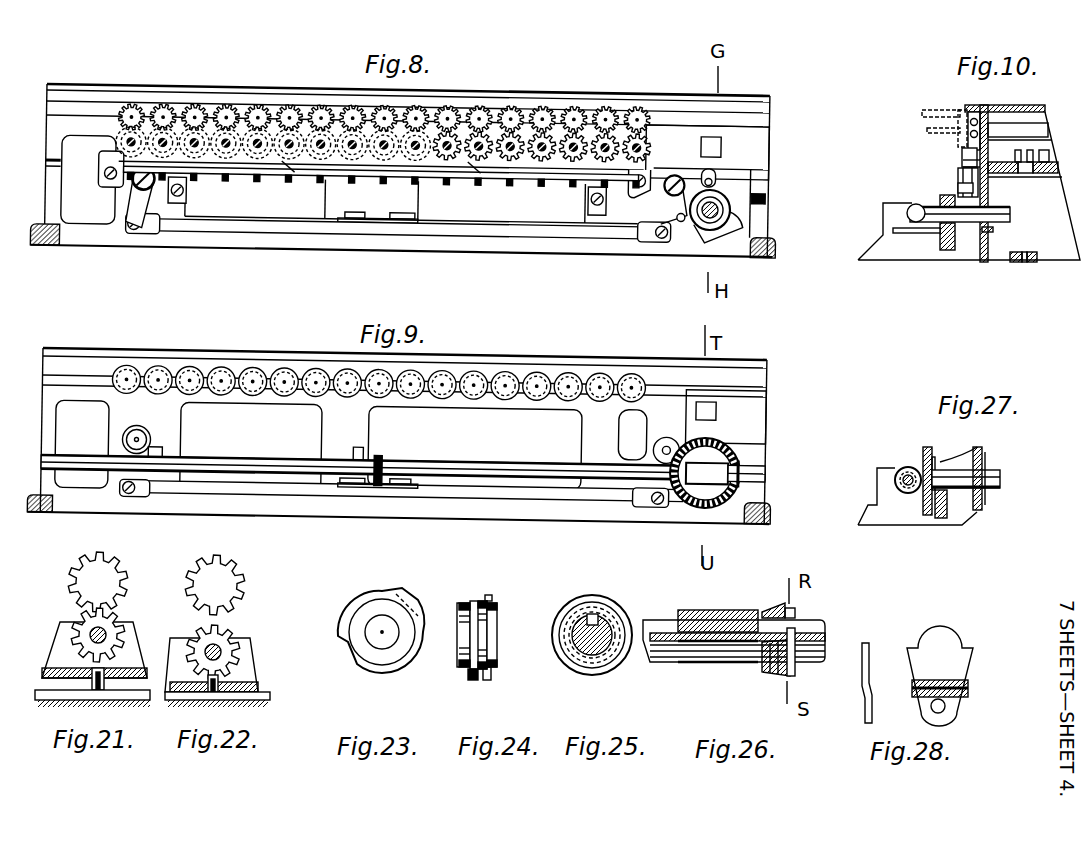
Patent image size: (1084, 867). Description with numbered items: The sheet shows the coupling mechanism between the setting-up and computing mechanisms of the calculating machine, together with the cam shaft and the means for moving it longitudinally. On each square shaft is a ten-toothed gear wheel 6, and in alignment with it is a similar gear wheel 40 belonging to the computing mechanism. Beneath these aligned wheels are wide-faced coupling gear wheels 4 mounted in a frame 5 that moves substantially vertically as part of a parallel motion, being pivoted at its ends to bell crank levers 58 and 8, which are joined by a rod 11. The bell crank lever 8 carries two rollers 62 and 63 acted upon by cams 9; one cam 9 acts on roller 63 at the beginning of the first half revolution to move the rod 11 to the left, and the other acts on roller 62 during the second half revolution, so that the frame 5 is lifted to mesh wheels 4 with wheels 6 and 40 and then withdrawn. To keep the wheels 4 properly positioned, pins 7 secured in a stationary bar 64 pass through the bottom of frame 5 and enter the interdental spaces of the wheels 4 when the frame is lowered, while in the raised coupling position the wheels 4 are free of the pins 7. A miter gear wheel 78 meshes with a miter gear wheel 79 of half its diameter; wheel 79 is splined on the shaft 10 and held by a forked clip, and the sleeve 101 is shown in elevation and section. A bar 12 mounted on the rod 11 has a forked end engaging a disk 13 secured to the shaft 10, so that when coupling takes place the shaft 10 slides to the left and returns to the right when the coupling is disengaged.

In FIG. 8, the coupling gear wheel 4 is at (651, 139).
In FIG. 10, the coupling gear wheel 4 is at (962, 153).
In FIG. 21, the coupling gear wheel 4 is at (82, 622).
In FIG. 22, the coupling gear wheel 4 is at (222, 638).
In FIG. 8, the frame 5 is at (245, 158).
In FIG. 10, the frame 5 is at (963, 165).
In FIG. 21, the frame 5 is at (94, 650).
In FIG. 22, the frame 5 is at (250, 658).
In FIG. 8, the ten-toothed gear wheel 6 is at (135, 106).
In FIG. 9, the ten-toothed gear wheel 6 is at (128, 364).
In FIG. 10, the ten-toothed gear wheel 6 is at (986, 120).
In FIG. 21, the ten-toothed gear wheel 6 is at (97, 582).
In FIG. 22, the ten-toothed gear wheel 6 is at (214, 585).
In FIG. 8, the pin 7 is at (292, 170).
In FIG. 21, the pin 7 is at (105, 676).
In FIG. 22, the pin 7 is at (220, 689).
In FIG. 8, the bell crank lever 8 is at (674, 199).
In FIG. 10, the bell crank lever 8 is at (958, 178).
In FIG. 8, the cam 9 is at (735, 190).
In FIG. 10, the cam 9 is at (988, 205).
In FIG. 23, the cam 9 is at (396, 668).
In FIG. 24, the cam 9 is at (492, 674).
In FIG. 9, the shaft 10 is at (240, 462).
In FIG. 27, the shaft 10 is at (907, 486).
In FIG. 25, the shaft 10 is at (588, 652).
In FIG. 26, the shaft 10 is at (663, 662).
In FIG. 8, the rod 11 is at (255, 224).
In FIG. 9, the rod 11 is at (265, 488).
In FIG. 8, the bar 12 is at (380, 212).
In FIG. 9, the bar 12 is at (365, 470).
In FIG. 10, the bar 12 is at (928, 231).
In FIG. 9, the disk 13 is at (383, 451).
In FIG. 10, the gear wheel 40 is at (966, 120).
In FIG. 8, the bell crank lever 58 is at (139, 197).
In FIG. 8, the roller 62 is at (715, 169).
In FIG. 10, the roller 62 is at (958, 188).
In FIG. 8, the roller 63 is at (683, 212).
In FIG. 8, the rail 64 is at (530, 176).
In FIG. 21, the rail 64 is at (62, 694).
In FIG. 22, the rail 64 is at (268, 701).
In FIG. 9, the miter gear wheel 78 is at (722, 436).
In FIG. 27, the miter gear wheel 78 is at (934, 460).
In FIG. 9, the miter gear wheel 79 is at (742, 458).
In FIG. 27, the miter gear wheel 79 is at (908, 470).
In FIG. 25, the miter gear wheel 79 is at (605, 668).
In FIG. 26, the miter gear wheel 79 is at (773, 674).
In FIG. 9, the sleeve 101 is at (708, 473).
In FIG. 26, the sleeve 101 is at (718, 636).